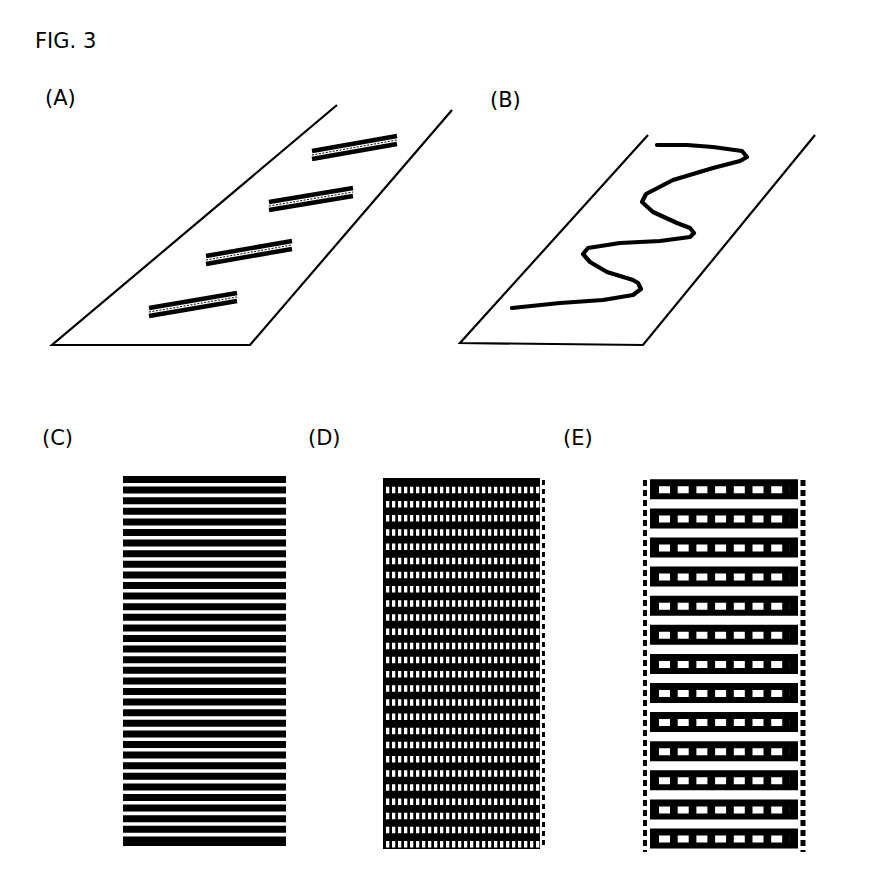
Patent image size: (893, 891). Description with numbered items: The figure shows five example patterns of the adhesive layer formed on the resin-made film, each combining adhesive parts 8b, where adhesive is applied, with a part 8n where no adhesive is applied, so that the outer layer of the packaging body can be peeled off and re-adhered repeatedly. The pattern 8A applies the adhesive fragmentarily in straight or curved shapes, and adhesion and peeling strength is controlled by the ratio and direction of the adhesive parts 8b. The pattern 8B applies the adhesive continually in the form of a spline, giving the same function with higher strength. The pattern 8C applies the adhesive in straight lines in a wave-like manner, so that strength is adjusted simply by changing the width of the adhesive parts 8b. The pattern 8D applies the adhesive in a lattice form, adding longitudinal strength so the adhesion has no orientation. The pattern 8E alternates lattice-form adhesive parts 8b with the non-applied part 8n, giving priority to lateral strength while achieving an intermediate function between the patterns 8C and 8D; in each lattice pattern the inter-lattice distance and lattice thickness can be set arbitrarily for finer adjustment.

The pattern of non-adhesive parts with fragmentary adhesive 8A is at (188, 220).
The pattern of non-adhesive parts with spline-form adhesive 8B is at (532, 247).
The pattern of non-adhesive parts with straight-line adhesive 8C is at (203, 468).
The pattern of non-adhesive parts with lattice-form adhesive 8D is at (463, 472).
The pattern of non-adhesive parts with alternating lattice adhesive 8E is at (738, 473).
The part not applied the adhesive 8n is at (275, 182).
The adhesive parts 8b is at (320, 203).